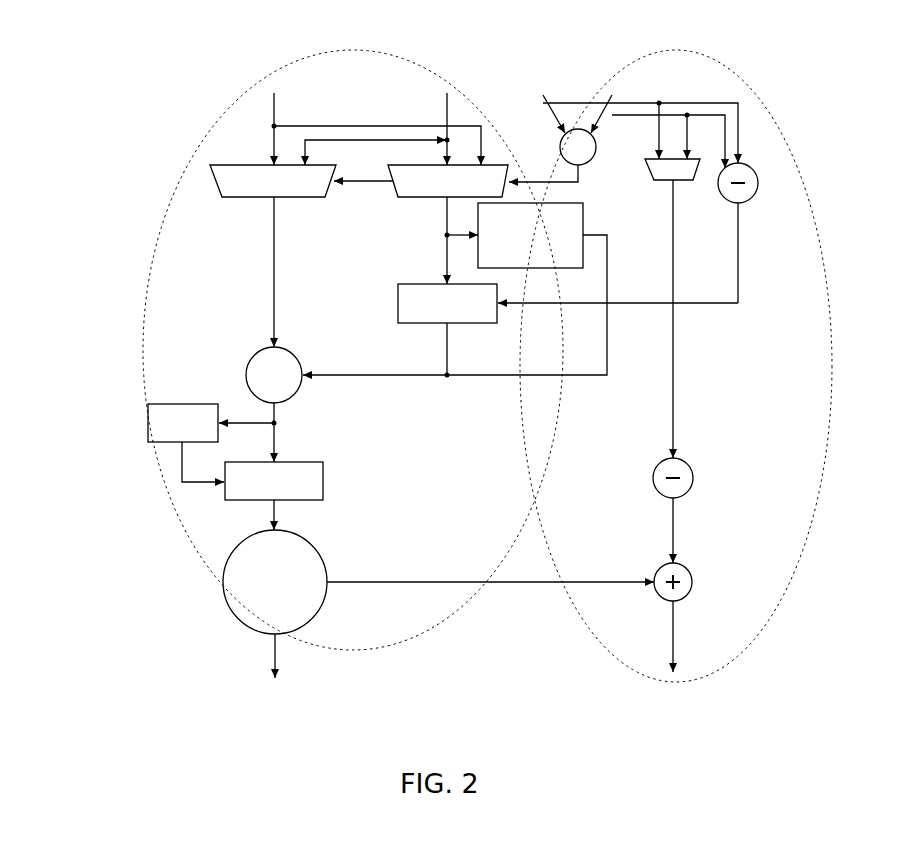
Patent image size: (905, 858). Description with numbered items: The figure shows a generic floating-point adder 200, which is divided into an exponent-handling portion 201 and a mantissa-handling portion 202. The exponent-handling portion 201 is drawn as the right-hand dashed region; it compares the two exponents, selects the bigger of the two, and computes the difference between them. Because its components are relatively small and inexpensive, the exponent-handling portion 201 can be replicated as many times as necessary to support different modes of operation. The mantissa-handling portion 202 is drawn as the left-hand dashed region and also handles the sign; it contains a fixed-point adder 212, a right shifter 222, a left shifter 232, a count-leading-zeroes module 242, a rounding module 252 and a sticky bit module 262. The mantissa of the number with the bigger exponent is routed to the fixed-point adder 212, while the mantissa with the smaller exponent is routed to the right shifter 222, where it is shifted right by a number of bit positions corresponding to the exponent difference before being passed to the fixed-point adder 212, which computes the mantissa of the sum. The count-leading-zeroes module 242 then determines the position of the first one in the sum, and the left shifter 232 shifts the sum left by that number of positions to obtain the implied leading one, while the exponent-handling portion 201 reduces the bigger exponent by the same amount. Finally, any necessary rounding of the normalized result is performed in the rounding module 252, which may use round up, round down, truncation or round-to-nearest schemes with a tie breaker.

The floating-point adder 200 is at (158, 58).
The exponent-handling portion 201 is at (690, 53).
The mantissa-handling portion 202 is at (258, 90).
The fixed-point adder 212 is at (247, 370).
The right shifter 222 is at (430, 283).
The left shifter 232 is at (298, 462).
The count-leading-zeroes module 242 is at (150, 404).
The rounding module 252 is at (258, 531).
The sticky bit module 262 is at (585, 222).